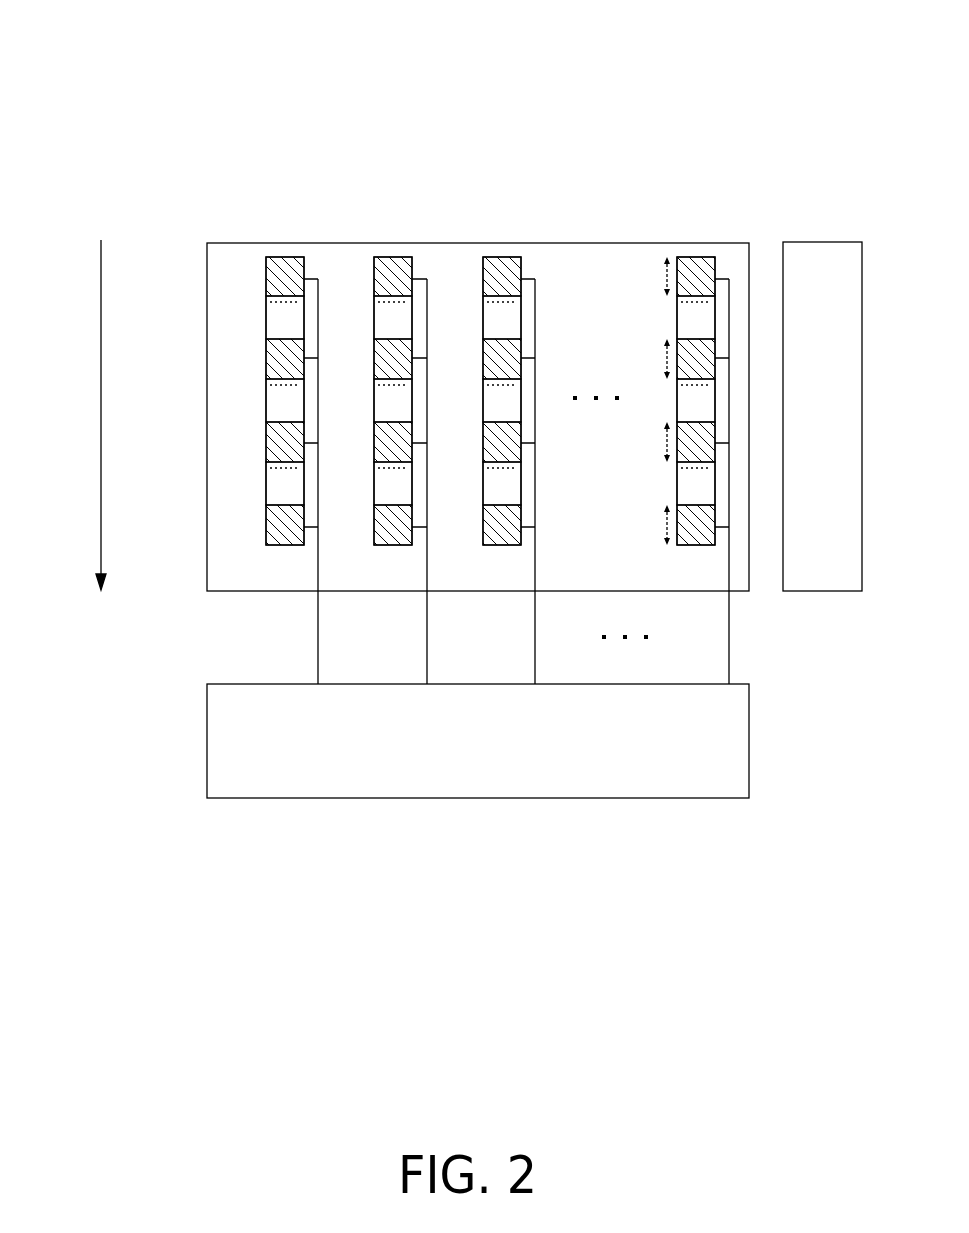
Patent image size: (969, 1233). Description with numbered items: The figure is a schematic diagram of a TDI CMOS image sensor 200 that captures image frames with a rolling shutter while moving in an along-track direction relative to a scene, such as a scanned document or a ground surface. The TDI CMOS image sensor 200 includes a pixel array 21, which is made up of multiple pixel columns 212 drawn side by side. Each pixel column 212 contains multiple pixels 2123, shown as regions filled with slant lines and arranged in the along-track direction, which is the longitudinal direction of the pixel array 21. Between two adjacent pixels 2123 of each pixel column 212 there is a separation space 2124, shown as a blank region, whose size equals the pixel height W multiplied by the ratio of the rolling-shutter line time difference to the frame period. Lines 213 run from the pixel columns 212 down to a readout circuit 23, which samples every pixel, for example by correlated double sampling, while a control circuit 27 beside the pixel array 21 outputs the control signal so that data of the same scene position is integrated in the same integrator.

The TDI CMOS image sensor 200 is at (188, 29).
The pixel array 21 is at (232, 243).
The pixel column 212 is at (282, 257).
The pixel 2123 is at (266, 274).
The separation space 2124 is at (266, 318).
The column line 213 is at (318, 632).
The readout circuit 23 is at (750, 737).
The control circuit 27 is at (816, 242).